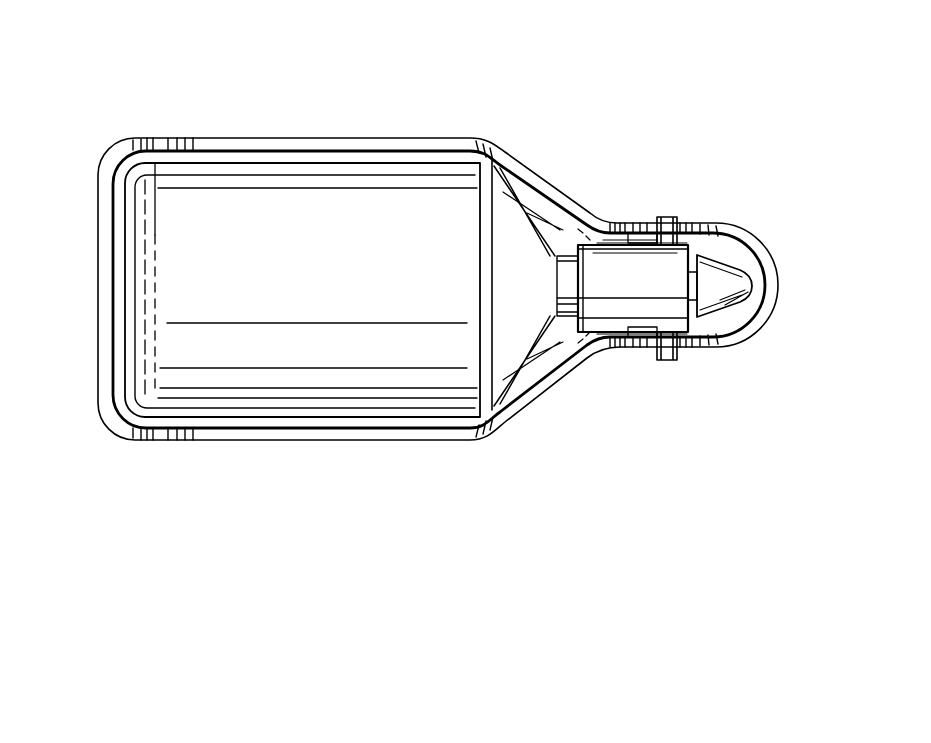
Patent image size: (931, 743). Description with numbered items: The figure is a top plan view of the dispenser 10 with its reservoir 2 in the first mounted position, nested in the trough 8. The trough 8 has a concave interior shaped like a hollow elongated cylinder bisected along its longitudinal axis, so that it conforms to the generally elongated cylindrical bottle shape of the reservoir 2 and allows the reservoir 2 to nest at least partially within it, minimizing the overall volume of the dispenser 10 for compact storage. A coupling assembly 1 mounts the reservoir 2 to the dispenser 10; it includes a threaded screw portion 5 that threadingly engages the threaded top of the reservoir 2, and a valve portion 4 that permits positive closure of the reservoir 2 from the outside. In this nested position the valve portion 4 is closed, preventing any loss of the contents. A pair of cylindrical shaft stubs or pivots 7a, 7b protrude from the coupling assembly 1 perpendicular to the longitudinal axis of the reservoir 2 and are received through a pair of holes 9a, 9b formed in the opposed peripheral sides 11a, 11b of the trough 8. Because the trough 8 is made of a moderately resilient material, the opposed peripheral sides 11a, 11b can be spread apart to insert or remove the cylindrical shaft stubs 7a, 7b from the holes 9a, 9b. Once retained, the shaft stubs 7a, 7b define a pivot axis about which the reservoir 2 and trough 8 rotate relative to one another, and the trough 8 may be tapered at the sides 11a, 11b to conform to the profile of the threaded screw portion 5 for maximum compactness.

The dispenser 10 is at (145, 82).
The coupling assembly 1 is at (728, 250).
The reservoir 2 is at (421, 178).
The valve portion 4 is at (752, 304).
The threaded screw portion 5 is at (602, 318).
The cylindrical shaft stub 7a is at (677, 359).
The cylindrical shaft stub 7b is at (665, 217).
The trough 8 is at (174, 441).
The hole 9a is at (641, 346).
The hole 9b is at (641, 231).
The opposed peripheral side 11a is at (708, 352).
The opposed peripheral side 11b is at (696, 222).